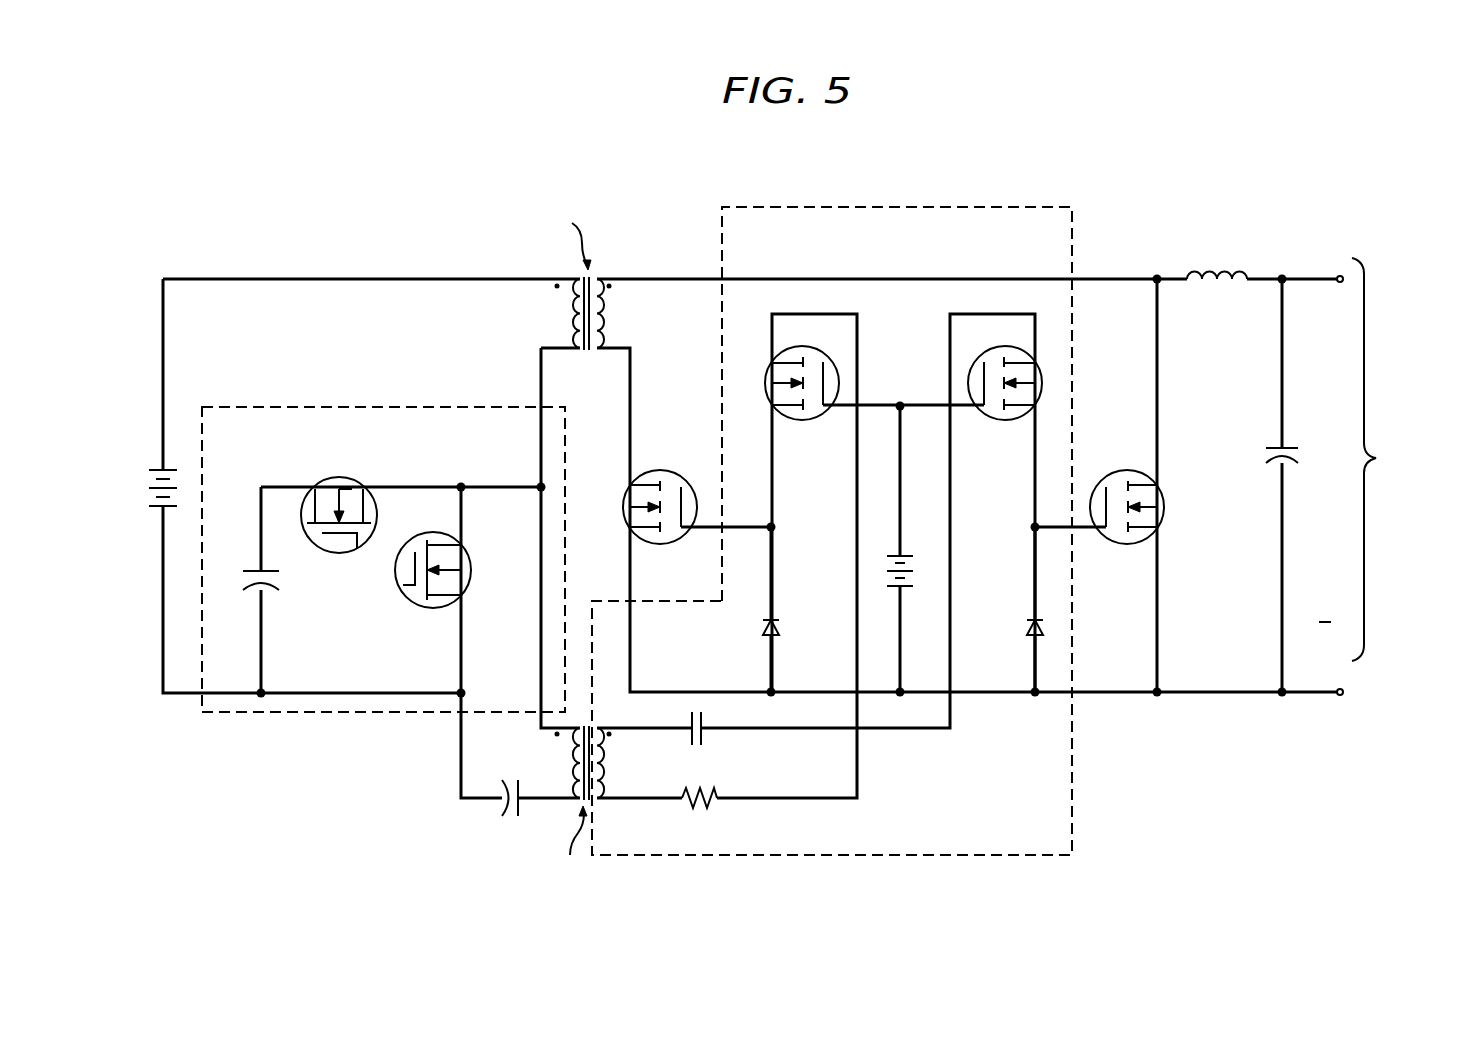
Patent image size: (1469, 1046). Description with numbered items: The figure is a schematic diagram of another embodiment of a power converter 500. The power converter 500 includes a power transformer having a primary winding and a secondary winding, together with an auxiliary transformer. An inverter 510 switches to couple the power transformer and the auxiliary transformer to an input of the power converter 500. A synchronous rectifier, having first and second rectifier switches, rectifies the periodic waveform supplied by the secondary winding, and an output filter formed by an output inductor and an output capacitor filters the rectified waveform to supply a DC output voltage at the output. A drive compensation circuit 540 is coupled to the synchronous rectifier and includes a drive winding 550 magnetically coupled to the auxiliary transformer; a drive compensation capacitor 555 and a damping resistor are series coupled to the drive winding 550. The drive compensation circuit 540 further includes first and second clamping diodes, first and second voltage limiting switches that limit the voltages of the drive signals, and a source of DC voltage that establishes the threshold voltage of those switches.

The power converter 500 is at (505, 208).
The inverter 510 is at (262, 714).
The drive compensation circuit 540 is at (1052, 206).
The drive winding 550 is at (602, 761).
The drive compensation capacitor 555 is at (709, 737).